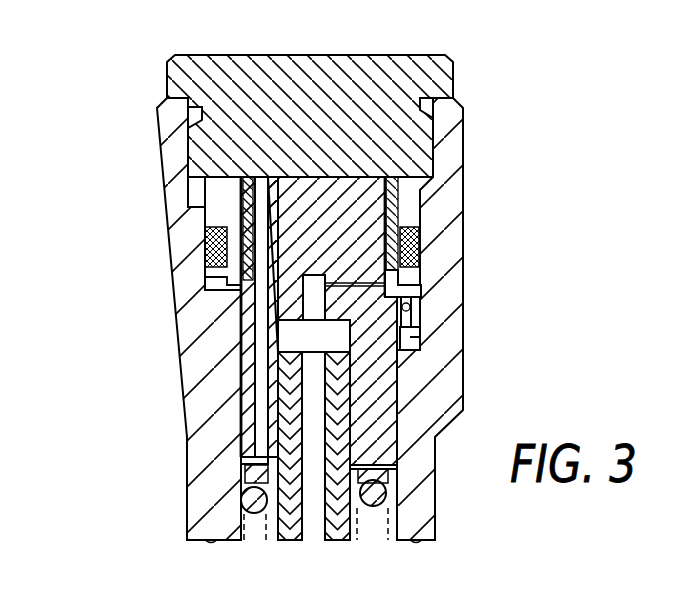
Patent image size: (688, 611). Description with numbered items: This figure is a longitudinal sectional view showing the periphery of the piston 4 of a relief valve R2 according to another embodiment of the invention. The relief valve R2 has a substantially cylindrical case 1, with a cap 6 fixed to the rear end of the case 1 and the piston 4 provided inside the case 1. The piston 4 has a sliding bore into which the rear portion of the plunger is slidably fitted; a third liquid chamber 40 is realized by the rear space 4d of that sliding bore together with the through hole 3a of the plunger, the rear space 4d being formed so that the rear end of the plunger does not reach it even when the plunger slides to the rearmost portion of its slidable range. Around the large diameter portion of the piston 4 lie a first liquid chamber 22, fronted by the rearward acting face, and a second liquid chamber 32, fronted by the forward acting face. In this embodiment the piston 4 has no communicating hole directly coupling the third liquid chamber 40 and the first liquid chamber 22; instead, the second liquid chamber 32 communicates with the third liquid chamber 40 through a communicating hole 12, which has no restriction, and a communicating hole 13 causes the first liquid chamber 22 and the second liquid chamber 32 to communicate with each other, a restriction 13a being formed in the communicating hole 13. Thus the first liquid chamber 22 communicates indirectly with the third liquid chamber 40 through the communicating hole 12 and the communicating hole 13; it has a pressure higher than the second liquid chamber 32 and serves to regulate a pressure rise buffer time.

The case 1 is at (457, 147).
The piston 4 is at (320, 193).
The cap 6 is at (423, 78).
The communicating hole 12 is at (342, 285).
The communicating hole 13 is at (425, 310).
The restriction 13a is at (425, 300).
The first liquid chamber 22 is at (425, 340).
The second liquid chamber 32 is at (420, 290).
The third liquid chamber 40 is at (184, 358).
The rear space of the sliding bore 4d is at (297, 333).
The through hole 3a is at (310, 397).
The relief valve R2 is at (548, 144).